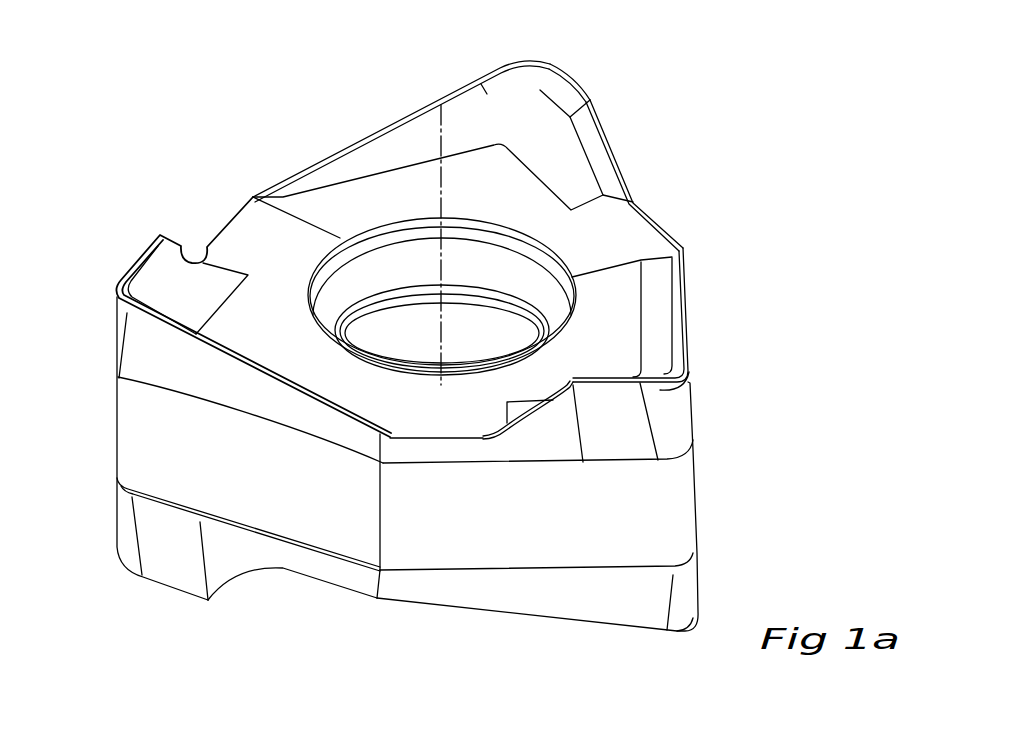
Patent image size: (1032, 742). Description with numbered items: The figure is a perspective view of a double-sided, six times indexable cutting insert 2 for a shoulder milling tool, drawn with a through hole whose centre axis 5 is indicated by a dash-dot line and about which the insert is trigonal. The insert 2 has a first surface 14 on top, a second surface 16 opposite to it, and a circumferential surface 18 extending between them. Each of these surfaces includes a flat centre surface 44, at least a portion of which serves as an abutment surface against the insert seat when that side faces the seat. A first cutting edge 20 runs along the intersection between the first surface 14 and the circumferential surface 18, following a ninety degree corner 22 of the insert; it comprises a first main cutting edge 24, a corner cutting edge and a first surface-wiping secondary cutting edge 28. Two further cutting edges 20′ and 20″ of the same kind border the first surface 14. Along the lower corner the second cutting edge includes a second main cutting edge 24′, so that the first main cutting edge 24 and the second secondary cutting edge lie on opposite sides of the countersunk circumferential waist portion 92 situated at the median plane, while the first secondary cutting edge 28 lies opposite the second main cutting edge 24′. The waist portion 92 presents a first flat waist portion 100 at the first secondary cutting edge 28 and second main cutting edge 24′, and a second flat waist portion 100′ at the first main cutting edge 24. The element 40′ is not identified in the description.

The cutting insert 2 is at (407, 359).
The first surface 14 is at (443, 135).
The centre axis 5 is at (441, 128).
The cutting edge 20′ is at (582, 103).
The corner 40′ is at (668, 188).
The first main cutting edge 24 is at (678, 315).
The first cutting edge 20 is at (714, 398).
The first surface-wiping secondary cutting edge 28 is at (500, 420).
The flat centre surface 44 is at (282, 334).
The circumferential surface 18 is at (217, 474).
The second surface 16 is at (256, 594).
The second main cutting edge 24′ is at (536, 638).
The first flat waist portion 100 is at (545, 515).
The countersunk circumferential waist portion 92 is at (603, 547).
The second flat waist portion 100′ is at (757, 488).
The corner 22 is at (740, 549).